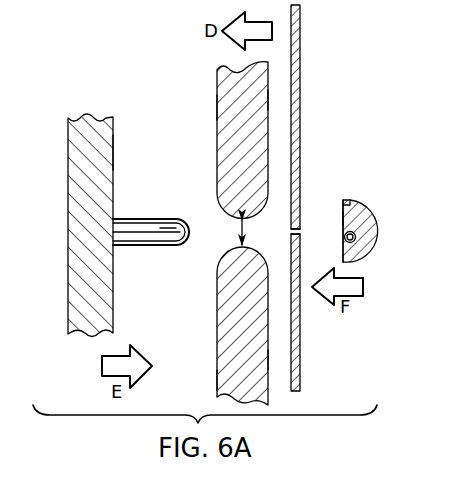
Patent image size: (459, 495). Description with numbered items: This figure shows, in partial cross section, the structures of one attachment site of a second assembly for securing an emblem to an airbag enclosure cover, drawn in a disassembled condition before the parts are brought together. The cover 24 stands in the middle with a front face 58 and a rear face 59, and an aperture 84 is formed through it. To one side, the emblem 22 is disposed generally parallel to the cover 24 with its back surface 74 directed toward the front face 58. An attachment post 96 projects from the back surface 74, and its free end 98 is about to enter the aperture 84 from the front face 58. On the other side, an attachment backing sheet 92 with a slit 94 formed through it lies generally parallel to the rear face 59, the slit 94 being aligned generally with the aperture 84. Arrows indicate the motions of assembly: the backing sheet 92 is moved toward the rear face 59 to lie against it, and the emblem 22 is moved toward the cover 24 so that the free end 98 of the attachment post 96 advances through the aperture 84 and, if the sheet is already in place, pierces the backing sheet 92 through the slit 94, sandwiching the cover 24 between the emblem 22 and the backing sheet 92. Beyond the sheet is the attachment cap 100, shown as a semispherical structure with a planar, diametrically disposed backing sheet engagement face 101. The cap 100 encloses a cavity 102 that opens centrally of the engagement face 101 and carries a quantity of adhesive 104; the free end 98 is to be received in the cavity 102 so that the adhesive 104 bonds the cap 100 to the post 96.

The emblem 22 is at (90, 112).
The back surface 74 is at (113, 162).
The attachment post 96 is at (138, 215).
The free end 98 is at (165, 230).
The cover 24 is at (219, 85).
The front face 58 is at (217, 108).
The rear face 59 is at (268, 100).
The aperture 84 is at (232, 238).
The attachment backing sheet 92 is at (302, 130).
The slit 94 is at (303, 230).
The attachment cap 100 is at (378, 222).
The backing sheet engagement face 101 is at (343, 208).
The cavity 102 is at (343, 219).
The adhesive 104 is at (337, 238).